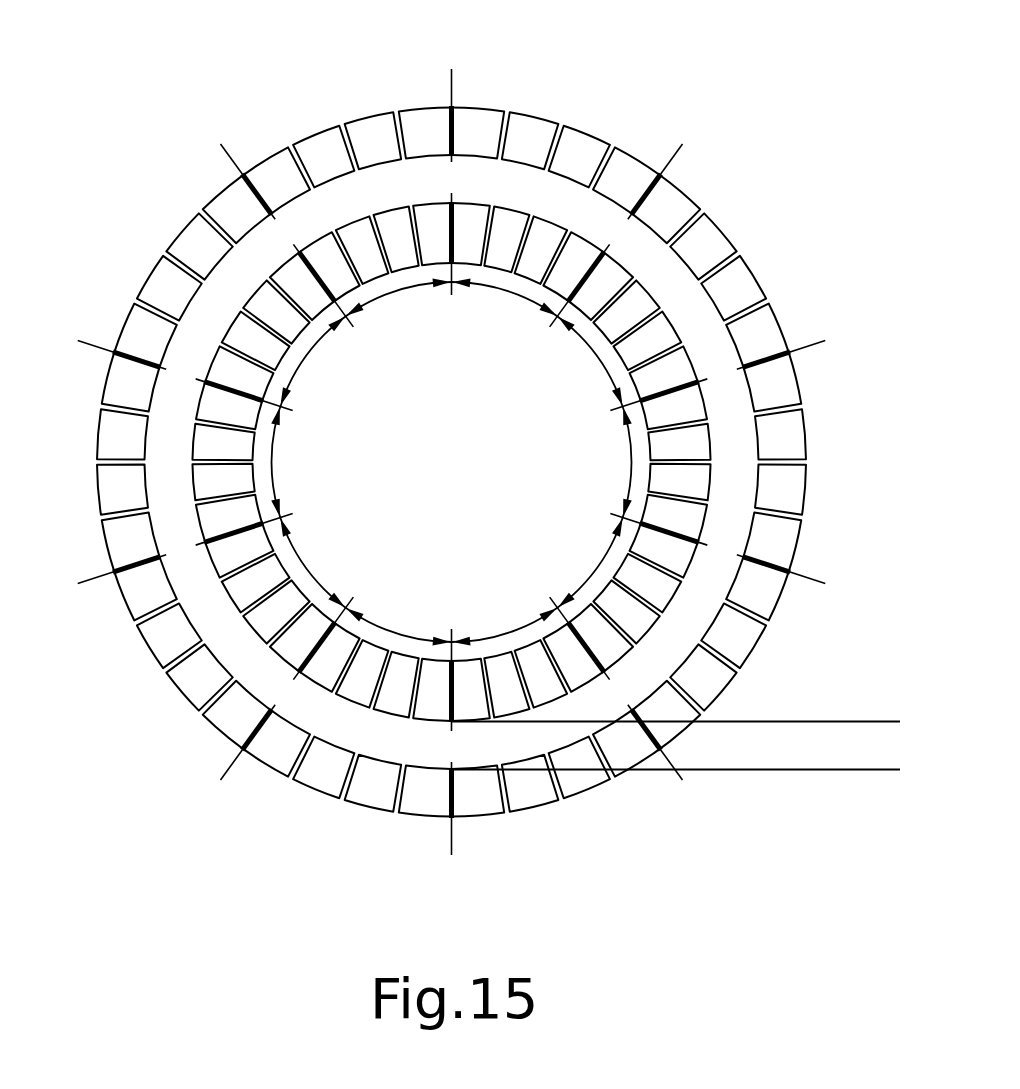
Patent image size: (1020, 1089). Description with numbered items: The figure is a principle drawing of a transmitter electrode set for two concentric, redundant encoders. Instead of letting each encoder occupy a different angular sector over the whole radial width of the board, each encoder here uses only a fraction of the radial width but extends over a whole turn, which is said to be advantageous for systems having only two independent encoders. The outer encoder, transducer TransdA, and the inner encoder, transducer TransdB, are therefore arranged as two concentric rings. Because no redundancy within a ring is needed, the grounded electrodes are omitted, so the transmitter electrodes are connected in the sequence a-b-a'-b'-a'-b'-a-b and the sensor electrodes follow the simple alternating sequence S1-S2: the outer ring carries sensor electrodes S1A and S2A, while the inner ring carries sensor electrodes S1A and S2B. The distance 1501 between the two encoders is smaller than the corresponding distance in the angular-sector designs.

The distance between the different encoders 1501 is at (887, 675).
The sensor electrode S1 of encoder A S1A is at (436, 437).
The sensor electrode S2 of encoder A S2A is at (466, 487).
The sensor electrode S2 of encoder B S2B is at (469, 471).
The transducer A TransdA is at (452, 456).
The transducer B TransdB is at (451, 462).